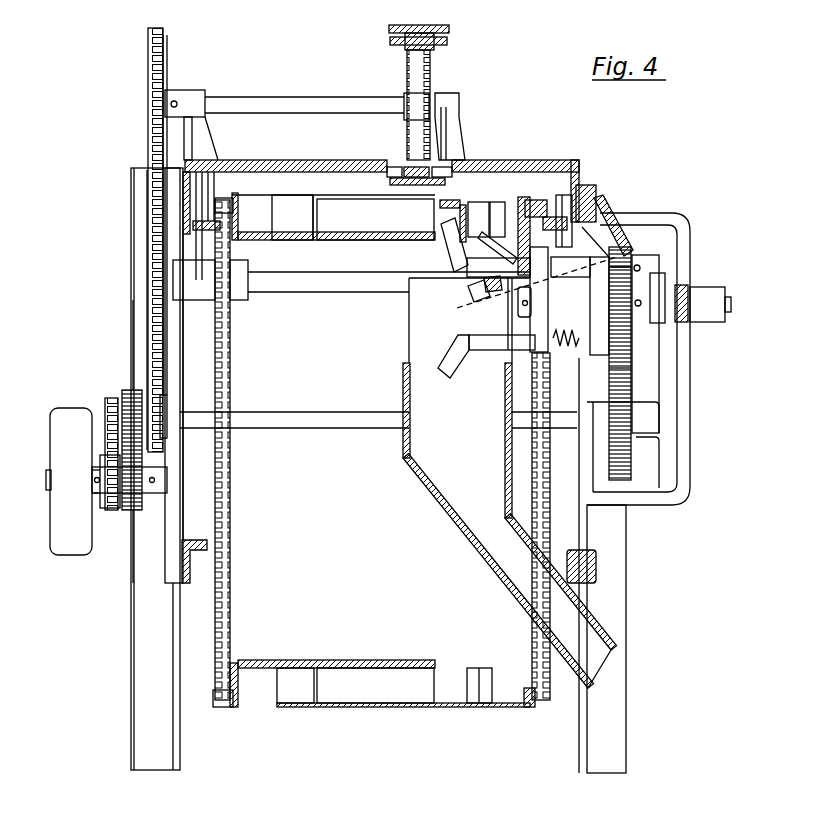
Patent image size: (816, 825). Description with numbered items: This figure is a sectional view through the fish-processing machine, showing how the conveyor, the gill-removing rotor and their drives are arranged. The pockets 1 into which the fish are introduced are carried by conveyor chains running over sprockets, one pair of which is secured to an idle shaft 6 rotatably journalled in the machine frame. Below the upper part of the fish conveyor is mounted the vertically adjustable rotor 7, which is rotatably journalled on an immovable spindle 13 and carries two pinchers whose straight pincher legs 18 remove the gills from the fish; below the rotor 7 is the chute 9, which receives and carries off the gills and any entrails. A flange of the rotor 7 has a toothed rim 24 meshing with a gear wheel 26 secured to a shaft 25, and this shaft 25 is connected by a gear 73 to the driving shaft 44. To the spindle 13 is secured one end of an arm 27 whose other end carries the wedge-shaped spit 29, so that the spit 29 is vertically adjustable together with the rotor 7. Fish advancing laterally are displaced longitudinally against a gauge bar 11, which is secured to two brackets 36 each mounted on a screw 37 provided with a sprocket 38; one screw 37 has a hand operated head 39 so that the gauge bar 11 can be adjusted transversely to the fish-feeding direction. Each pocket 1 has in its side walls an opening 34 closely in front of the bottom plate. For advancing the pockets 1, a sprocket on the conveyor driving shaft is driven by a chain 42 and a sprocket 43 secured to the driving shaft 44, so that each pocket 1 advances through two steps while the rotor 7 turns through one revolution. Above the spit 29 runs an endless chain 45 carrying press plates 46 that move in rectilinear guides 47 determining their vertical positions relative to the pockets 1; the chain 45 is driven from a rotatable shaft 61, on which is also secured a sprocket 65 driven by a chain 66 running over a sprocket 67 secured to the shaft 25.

The pockets 1 is at (358, 693).
The idle shaft 6 is at (341, 289).
The rotor 7 is at (638, 306).
The chute 9 is at (440, 512).
The gauge bar 11 is at (514, 200).
The spindle 13 is at (732, 304).
The pincher leg 18 is at (452, 378).
The toothed rim 24 is at (630, 252).
The shaft 25 is at (323, 432).
The gear wheel 26 is at (625, 470).
The arm 27 is at (690, 297).
The spit 29 is at (462, 203).
The opening 34 is at (443, 217).
The brackets 36 is at (508, 285).
The screw 37 is at (523, 289).
The sprocket 38 is at (560, 248).
The hand operated head 39 is at (605, 203).
The chain 42 is at (110, 402).
The sprocket 43 is at (110, 508).
The driving shaft 44 is at (48, 475).
The endless chain 45 is at (431, 77).
The press plates 46 is at (449, 29).
The rectilinear guides 47 is at (400, 165).
The rotatable shaft 61 is at (290, 103).
The sprocket 65 is at (165, 62).
The chain 66 is at (157, 226).
The sprocket 67 is at (165, 395).
The gear 73 is at (133, 440).